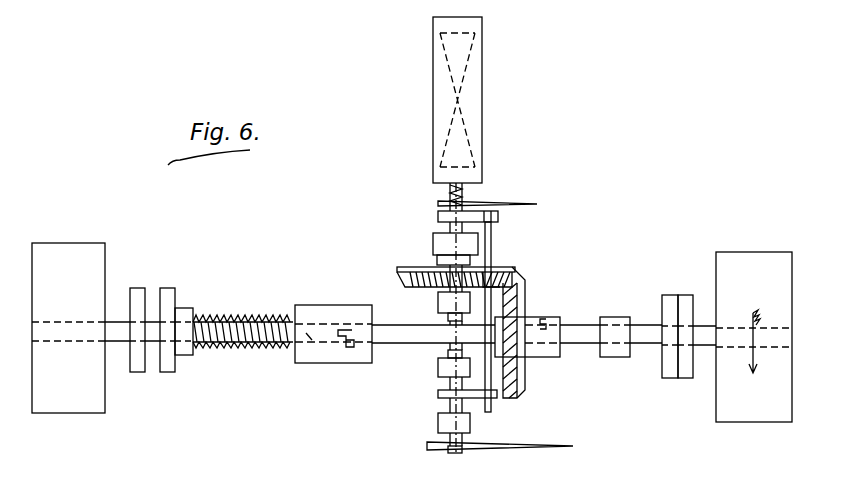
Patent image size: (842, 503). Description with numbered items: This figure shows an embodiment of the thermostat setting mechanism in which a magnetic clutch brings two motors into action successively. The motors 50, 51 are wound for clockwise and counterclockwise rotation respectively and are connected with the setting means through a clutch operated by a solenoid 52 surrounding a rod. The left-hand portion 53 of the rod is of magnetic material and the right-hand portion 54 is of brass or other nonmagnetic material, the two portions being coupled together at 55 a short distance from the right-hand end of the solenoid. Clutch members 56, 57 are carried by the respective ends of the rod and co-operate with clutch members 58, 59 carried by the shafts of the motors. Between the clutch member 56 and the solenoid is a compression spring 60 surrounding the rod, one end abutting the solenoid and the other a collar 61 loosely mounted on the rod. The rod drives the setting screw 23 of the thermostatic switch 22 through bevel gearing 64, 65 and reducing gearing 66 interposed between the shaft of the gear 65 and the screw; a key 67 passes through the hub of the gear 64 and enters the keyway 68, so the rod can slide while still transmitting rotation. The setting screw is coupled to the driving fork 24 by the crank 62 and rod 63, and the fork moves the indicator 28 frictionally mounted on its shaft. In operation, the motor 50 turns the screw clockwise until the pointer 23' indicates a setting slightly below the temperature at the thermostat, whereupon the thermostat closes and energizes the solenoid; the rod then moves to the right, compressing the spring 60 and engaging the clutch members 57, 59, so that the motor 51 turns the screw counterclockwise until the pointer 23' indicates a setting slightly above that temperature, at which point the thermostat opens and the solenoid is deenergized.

The thermostatic switch 22 is at (435, 50).
The setting screw 23 is at (497, 175).
The pointer 23' is at (530, 309).
The driving fork 24 is at (438, 397).
The indicator 28 is at (492, 449).
The motor 50 is at (58, 260).
The motor 51 is at (745, 265).
The solenoid 52 is at (362, 310).
The left-hand portion of rod 53 is at (310, 337).
The right-hand portion of rod 54 is at (428, 335).
The coupling 55 is at (347, 348).
The clutch member 56 is at (165, 367).
The clutch member 57 is at (670, 363).
The clutch member 58 is at (138, 362).
The clutch member 59 is at (687, 370).
The compression spring 60 is at (233, 315).
The collar 61 is at (182, 313).
The crank 62 is at (537, 204).
The rod 63 is at (492, 243).
The bevel gear 64 is at (520, 283).
The bevel gear 65 is at (412, 267).
The reducing gearing 66 is at (432, 240).
The key 67 is at (550, 312).
The keyway 68 is at (577, 327).